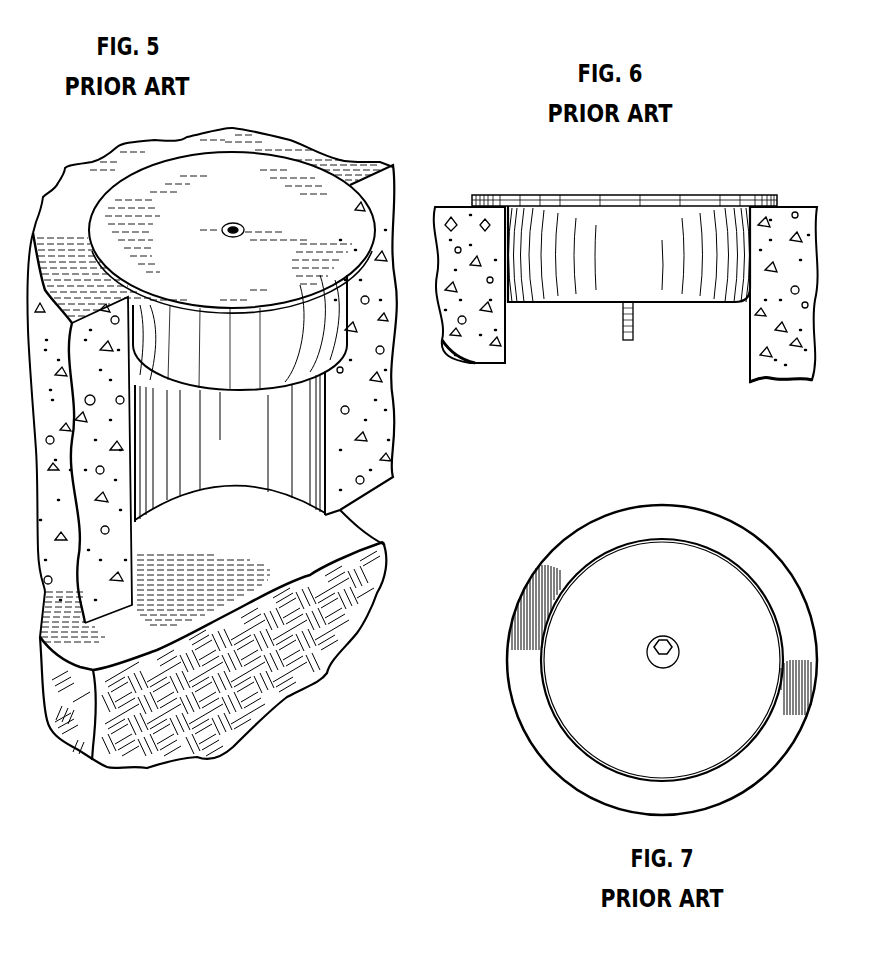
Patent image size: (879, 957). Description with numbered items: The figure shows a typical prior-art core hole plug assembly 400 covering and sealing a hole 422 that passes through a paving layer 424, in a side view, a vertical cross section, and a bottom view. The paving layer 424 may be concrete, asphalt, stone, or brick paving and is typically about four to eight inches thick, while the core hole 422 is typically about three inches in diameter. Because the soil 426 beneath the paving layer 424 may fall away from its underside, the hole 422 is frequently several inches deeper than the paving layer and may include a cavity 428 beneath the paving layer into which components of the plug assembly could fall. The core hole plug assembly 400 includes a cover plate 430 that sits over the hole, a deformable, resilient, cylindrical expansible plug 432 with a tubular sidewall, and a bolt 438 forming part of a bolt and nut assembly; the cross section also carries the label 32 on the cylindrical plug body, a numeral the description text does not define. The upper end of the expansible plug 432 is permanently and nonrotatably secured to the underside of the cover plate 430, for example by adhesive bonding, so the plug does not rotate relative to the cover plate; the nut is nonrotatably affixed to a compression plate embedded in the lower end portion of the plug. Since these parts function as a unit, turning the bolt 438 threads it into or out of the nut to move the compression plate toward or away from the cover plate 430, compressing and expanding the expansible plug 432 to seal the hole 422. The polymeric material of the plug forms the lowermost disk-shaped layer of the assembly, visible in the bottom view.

In FIG. 5, the core hole plug assembly 400 is at (287, 117).
In FIG. 6, the core hole plug assembly 400 is at (739, 160).
In FIG. 7, the core hole plug assembly 400 is at (751, 519).
In FIG. 5, the hole 422 is at (206, 455).
In FIG. 6, the hole 422 is at (670, 359).
In FIG. 5, the paving layer 424 is at (392, 448).
In FIG. 6, the paving layer 424 is at (495, 365).
In FIG. 5, the soil 426 is at (336, 658).
In FIG. 5, the cavity 428 is at (374, 509).
In FIG. 5, the cover plate 430 is at (208, 225).
In FIG. 6, the cover plate 430 is at (608, 195).
In FIG. 7, the cover plate 430 is at (605, 514).
In FIG. 5, the expansible plug 432 is at (240, 332).
In FIG. 7, the expansible plug 432 is at (580, 565).
In FIG. 5, the bolt 438 is at (238, 226).
In FIG. 6, the bolt 438 is at (623, 320).
In FIG. 7, the bolt 438 is at (660, 660).
In FIG. 6, the cylinder body 32 is at (629, 254).